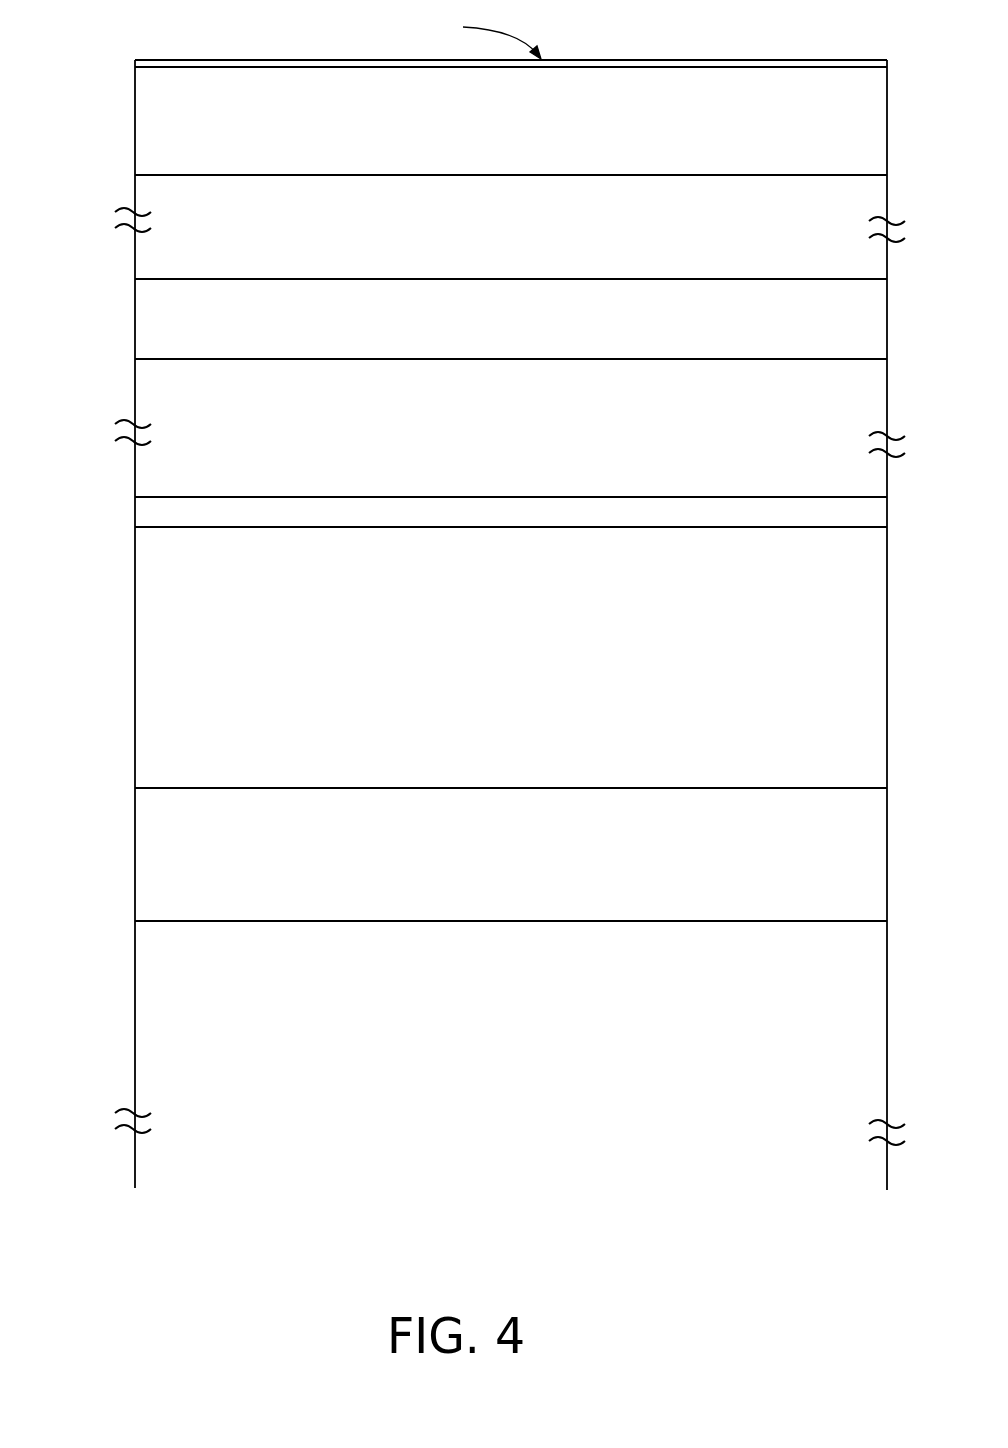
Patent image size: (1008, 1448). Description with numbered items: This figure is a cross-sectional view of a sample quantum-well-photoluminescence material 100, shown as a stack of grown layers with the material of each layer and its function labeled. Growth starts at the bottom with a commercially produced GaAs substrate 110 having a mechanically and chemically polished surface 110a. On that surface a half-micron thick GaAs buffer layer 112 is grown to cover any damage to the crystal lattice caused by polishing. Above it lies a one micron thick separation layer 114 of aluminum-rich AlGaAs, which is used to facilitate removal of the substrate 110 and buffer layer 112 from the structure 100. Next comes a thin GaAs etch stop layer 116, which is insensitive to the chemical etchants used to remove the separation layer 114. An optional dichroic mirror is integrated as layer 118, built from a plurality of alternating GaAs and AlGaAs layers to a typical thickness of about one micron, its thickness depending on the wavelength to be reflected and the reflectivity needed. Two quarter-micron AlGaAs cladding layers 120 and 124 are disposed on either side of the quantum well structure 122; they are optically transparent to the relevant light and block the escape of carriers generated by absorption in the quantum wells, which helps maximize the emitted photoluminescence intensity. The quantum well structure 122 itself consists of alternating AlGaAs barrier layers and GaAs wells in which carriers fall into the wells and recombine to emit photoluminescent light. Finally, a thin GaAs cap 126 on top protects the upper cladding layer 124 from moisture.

The quantum-well-photoluminescence material 100 is at (64, 1100).
The substrate 110 is at (145, 979).
The polished surface 110a is at (135, 921).
The buffer layer 112 is at (145, 848).
The separation layer 114 is at (145, 644).
The etch stop layer 116 is at (145, 517).
The dichroic layer 118 is at (145, 469).
The cladding layer 120 is at (145, 321).
The quantum well structure 122 is at (145, 196).
The cladding layer 124 is at (145, 114).
The cap 126 is at (135, 60).